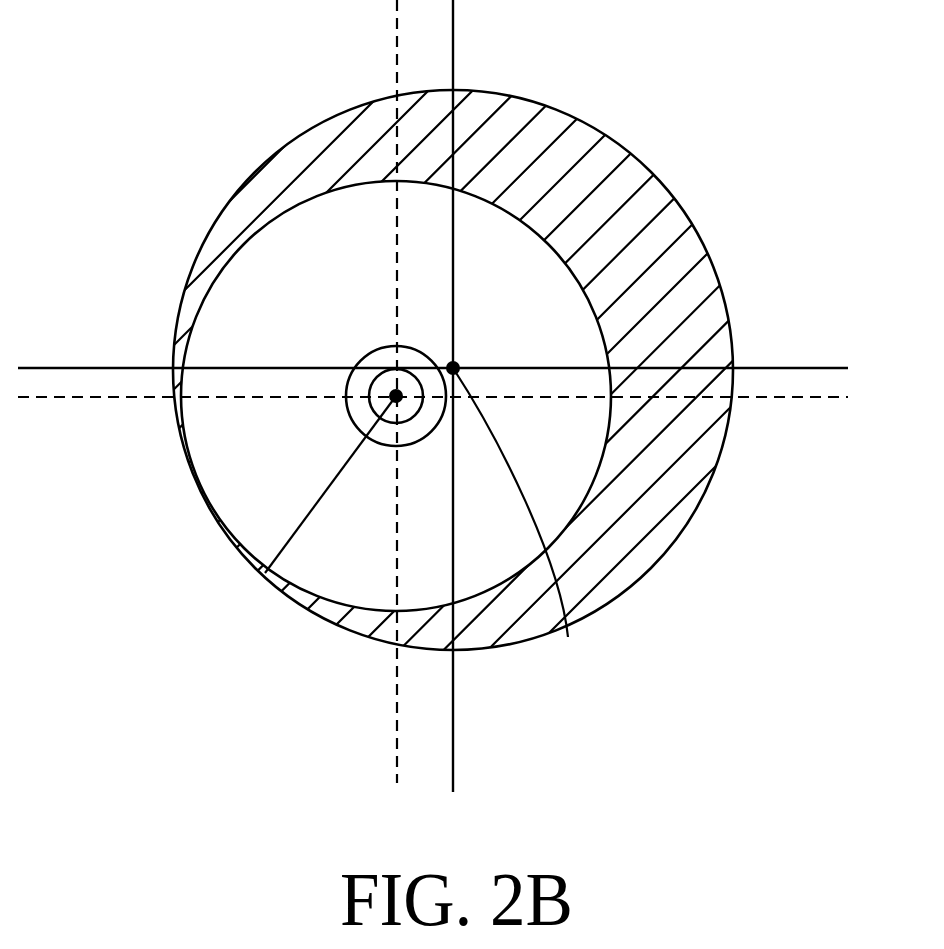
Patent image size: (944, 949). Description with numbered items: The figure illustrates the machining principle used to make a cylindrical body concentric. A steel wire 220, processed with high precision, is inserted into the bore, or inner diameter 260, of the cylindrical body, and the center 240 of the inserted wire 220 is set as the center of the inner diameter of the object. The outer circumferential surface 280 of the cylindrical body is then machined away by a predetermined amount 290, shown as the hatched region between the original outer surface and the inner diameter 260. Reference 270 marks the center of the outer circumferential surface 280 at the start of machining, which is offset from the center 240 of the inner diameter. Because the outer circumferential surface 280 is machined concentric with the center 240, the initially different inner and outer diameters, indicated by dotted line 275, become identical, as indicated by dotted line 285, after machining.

The steel wire 220 is at (370, 410).
The center of the inserted wire 240 is at (262, 576).
The inner diameter 260 is at (372, 357).
The center of the outer circumferential surface 270 is at (568, 637).
The dotted line 275 is at (815, 368).
The outer circumferential surface 280 is at (320, 122).
The dotted line 285 is at (815, 397).
The predetermined amount 290 is at (256, 204).